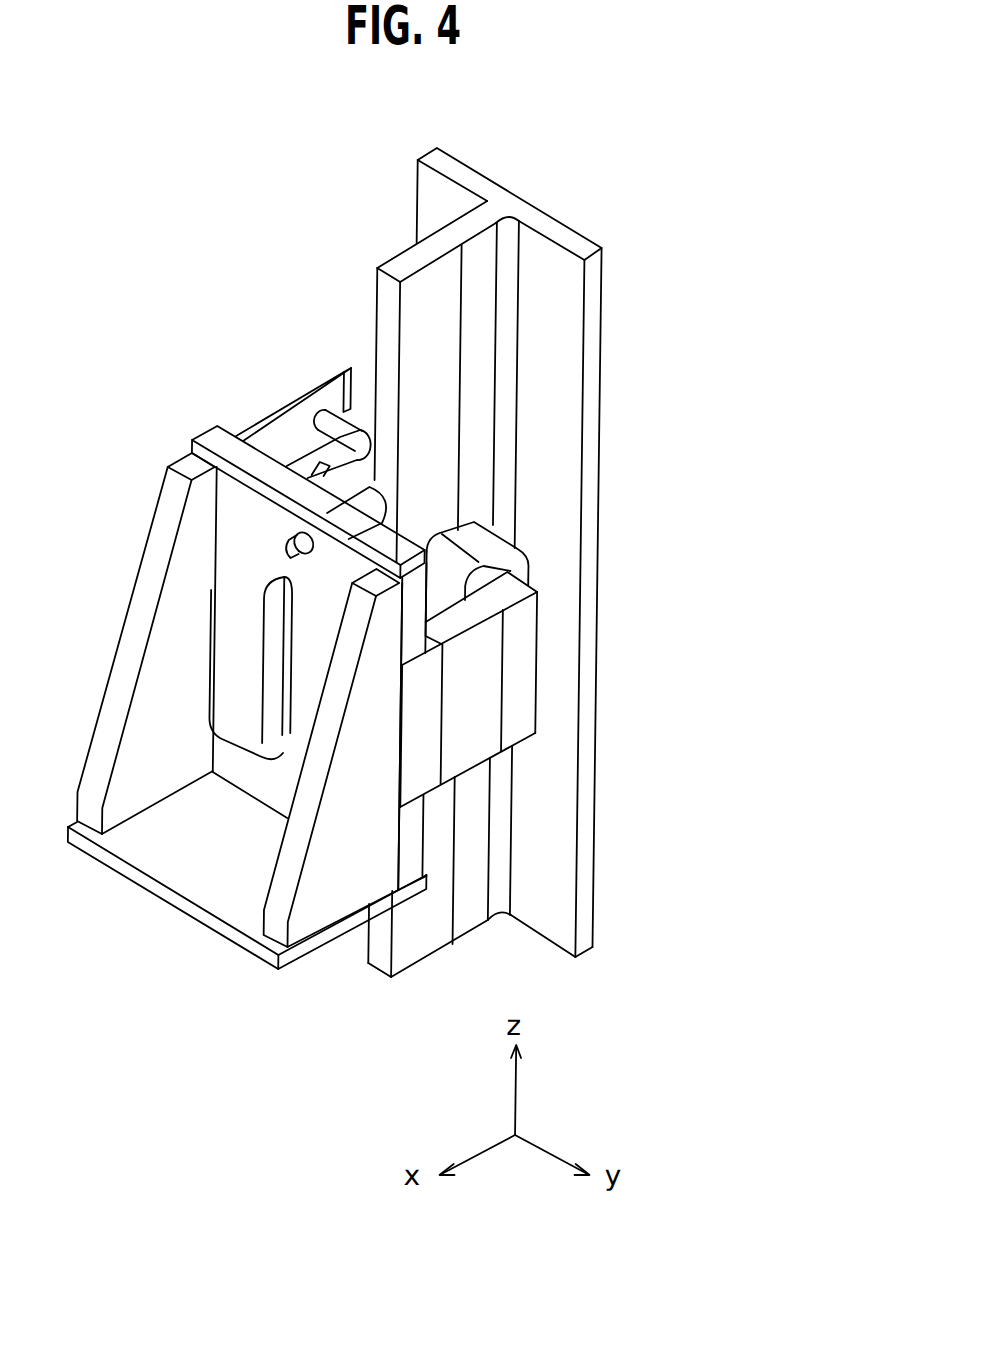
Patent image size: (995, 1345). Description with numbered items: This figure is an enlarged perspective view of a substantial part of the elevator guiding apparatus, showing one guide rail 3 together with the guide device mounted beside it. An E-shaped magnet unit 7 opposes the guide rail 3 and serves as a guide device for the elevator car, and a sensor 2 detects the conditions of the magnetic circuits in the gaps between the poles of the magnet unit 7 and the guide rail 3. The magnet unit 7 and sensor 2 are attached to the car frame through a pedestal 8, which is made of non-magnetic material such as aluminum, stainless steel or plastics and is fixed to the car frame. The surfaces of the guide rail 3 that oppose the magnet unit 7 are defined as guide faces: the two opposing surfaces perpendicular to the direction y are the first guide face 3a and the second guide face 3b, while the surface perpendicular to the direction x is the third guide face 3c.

The sensor 2 is at (270, 398).
The guide rail 3 is at (560, 240).
The first guide face 3a is at (384, 258).
The second guide face 3b is at (433, 325).
The third guide face 3c is at (381, 318).
The E-shaped magnet unit 7 is at (529, 718).
The pedestal 8 is at (207, 883).